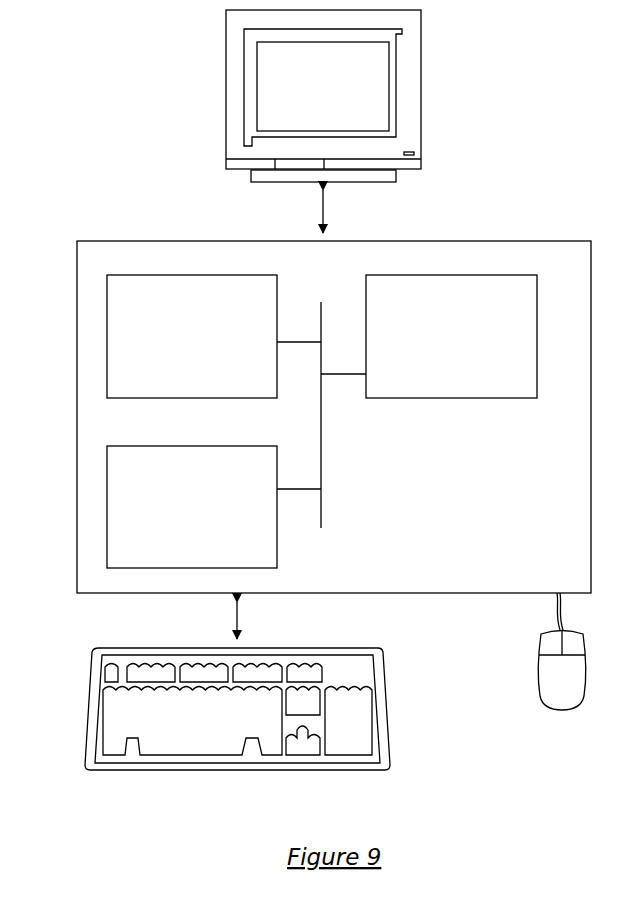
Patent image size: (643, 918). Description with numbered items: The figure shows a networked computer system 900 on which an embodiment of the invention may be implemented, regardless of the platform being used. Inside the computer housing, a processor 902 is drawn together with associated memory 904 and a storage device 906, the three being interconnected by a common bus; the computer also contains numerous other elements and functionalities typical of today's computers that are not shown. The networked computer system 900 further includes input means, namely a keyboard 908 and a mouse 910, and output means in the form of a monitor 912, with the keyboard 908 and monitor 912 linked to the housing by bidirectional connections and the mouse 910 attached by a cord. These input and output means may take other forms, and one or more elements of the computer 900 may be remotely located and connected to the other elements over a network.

The networked computer system 900 is at (559, 156).
The processor 902 is at (451, 336).
The memory 904 is at (192, 336).
The storage device 906 is at (192, 507).
The keyboard 908 is at (237, 709).
The mouse 910 is at (562, 651).
The monitor 912 is at (323, 96).